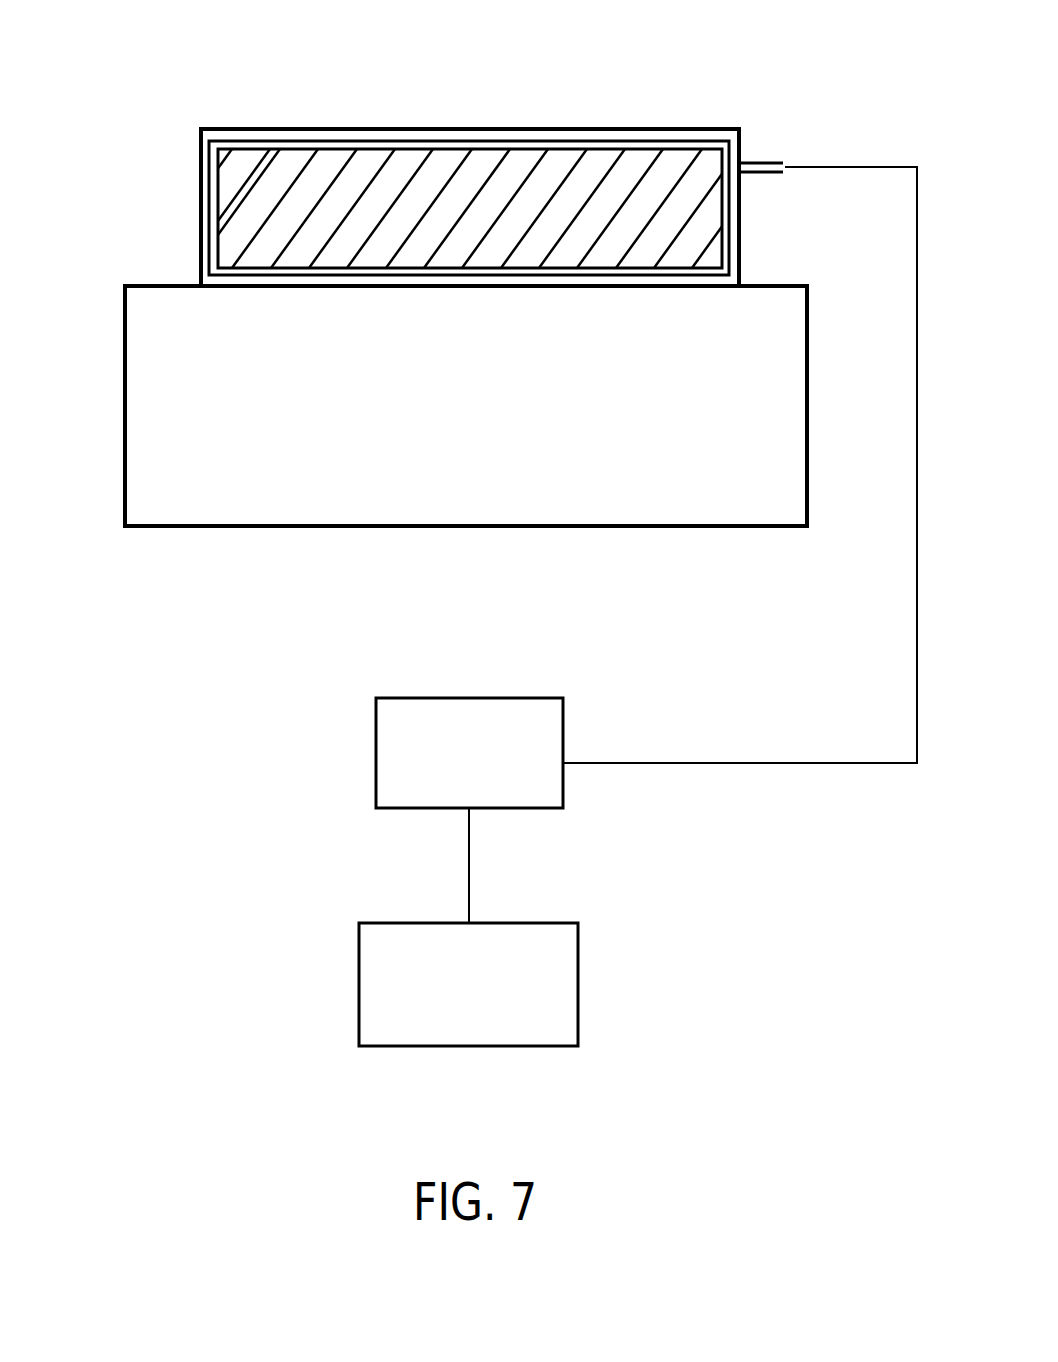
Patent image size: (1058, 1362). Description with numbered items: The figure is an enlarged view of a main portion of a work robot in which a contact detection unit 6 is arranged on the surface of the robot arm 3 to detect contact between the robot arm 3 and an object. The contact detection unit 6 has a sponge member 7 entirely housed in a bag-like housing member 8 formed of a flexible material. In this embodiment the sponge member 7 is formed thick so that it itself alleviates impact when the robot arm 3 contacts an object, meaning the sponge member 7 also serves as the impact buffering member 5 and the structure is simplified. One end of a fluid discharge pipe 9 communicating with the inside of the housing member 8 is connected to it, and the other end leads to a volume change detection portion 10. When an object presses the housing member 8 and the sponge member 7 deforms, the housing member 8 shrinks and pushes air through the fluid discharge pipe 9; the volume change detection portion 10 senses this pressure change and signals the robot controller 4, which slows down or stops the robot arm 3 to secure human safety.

The robot arm 3 is at (123, 412).
The robot controller 4 is at (355, 971).
The impact buffering member 5 is at (439, 207).
The contact detection unit 6 is at (304, 122).
The sponge member 7 is at (252, 175).
The housing member 8 is at (442, 131).
The fluid discharge pipe 9 is at (767, 158).
The volume change detection portion 10 is at (376, 758).